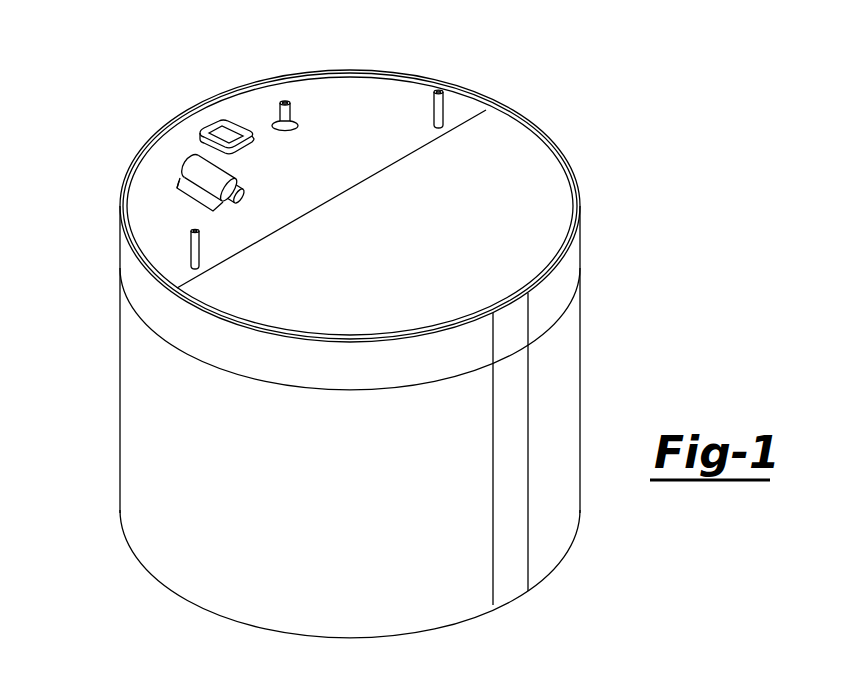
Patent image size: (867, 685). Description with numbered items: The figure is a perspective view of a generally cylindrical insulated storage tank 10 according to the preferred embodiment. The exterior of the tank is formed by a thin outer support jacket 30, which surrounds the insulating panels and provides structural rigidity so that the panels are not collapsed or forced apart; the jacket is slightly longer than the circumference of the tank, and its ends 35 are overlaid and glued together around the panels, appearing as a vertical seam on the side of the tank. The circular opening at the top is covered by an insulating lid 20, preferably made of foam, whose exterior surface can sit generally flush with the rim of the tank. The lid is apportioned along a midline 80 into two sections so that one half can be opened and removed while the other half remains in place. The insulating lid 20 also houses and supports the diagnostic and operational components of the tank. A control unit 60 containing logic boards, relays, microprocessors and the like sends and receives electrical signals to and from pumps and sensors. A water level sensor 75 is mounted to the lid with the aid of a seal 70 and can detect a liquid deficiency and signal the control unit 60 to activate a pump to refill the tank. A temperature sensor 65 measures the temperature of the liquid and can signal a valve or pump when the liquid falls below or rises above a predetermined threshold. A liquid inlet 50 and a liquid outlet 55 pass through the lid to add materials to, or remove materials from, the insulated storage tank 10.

The insulated storage tank 10 is at (625, 113).
The insulating lid 20 is at (550, 186).
The outer support jacket 30 is at (120, 412).
The ends of the outer support jacket 35 is at (500, 486).
The liquid inlet 50 is at (432, 100).
The liquid outlet 55 is at (190, 245).
The control unit 60 is at (187, 170).
The temperature sensor 65 is at (207, 128).
The seal 70 is at (297, 120).
The water level sensor 75 is at (280, 111).
The midline 80 is at (390, 168).